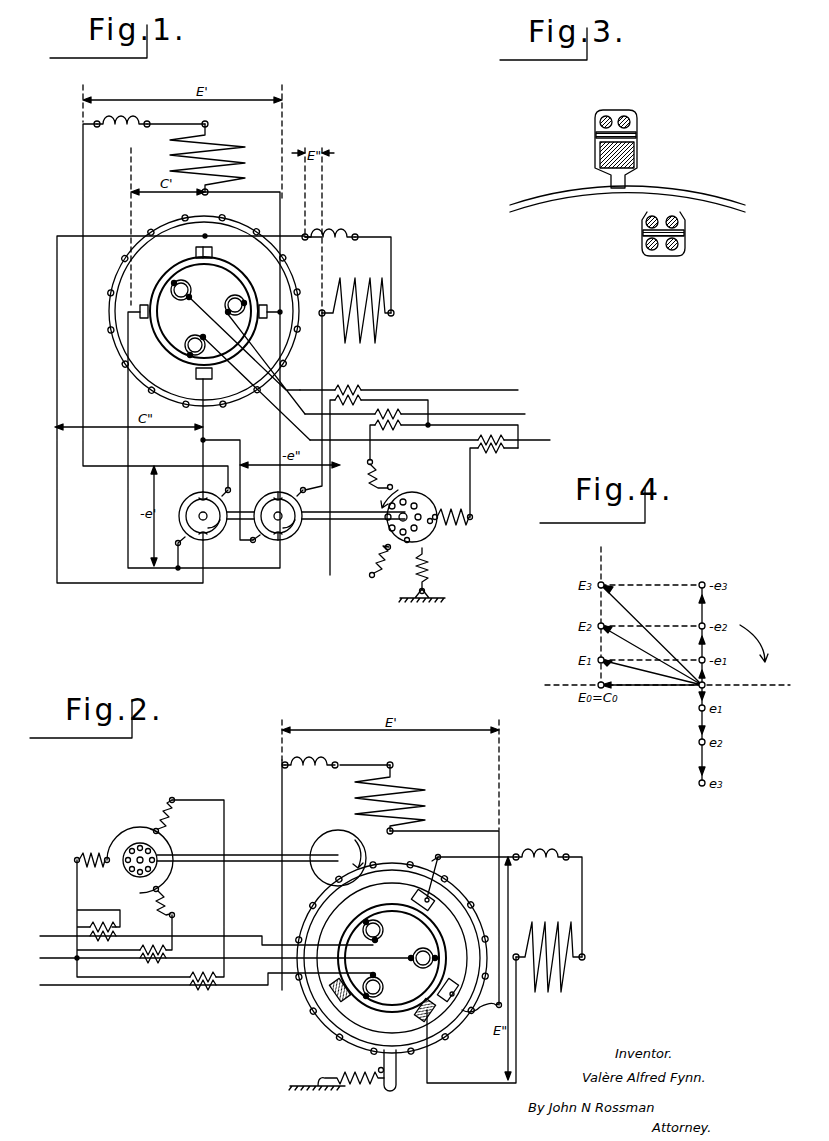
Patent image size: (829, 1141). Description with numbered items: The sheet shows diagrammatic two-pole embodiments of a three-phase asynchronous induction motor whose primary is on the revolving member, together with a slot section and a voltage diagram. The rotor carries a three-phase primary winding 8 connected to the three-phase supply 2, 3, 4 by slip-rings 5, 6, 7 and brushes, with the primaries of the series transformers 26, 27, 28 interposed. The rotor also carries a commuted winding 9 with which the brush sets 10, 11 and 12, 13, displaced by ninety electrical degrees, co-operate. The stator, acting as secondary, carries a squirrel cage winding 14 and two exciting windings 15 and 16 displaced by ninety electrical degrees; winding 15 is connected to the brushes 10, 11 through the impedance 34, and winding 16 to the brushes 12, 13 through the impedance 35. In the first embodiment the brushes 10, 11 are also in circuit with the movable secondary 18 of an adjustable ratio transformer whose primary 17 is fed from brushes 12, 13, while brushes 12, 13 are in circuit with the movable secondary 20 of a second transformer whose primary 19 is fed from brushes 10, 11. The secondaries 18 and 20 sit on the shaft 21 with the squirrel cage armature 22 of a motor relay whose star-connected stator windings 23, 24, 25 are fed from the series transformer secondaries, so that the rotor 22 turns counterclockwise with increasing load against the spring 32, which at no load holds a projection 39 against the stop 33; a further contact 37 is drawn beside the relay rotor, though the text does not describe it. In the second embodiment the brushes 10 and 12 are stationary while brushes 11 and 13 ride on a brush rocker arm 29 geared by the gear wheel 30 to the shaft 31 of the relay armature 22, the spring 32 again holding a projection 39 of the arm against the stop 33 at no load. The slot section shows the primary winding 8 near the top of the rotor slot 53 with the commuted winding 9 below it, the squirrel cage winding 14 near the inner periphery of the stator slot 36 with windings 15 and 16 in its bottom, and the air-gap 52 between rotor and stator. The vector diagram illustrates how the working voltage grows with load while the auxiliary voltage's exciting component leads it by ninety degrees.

In FIG. 1, the three-phase supply line 2 is at (504, 380).
In FIG. 2, the three-phase supply line 2 is at (44, 925).
In FIG. 1, the three-phase supply line 3 is at (522, 405).
In FIG. 2, the three-phase supply line 3 is at (44, 949).
In FIG. 1, the three-phase supply line 4 is at (547, 435).
In FIG. 2, the three-phase supply line 4 is at (44, 977).
In FIG. 1, the slip-ring 5 is at (236, 297).
In FIG. 2, the slip-ring 5 is at (378, 929).
In FIG. 1, the slip-ring 6 is at (183, 284).
In FIG. 2, the slip-ring 6 is at (423, 950).
In FIG. 1, the slip-ring 7 is at (189, 343).
In FIG. 2, the slip-ring 7 is at (378, 986).
In FIG. 1, the three-phase primary winding 8 is at (160, 343).
In FIG. 3, the three-phase primary winding 8 is at (646, 224).
In FIG. 2, the three-phase primary winding 8 is at (437, 942).
In FIG. 1, the commuted winding 9 is at (172, 276).
In FIG. 3, the commuted winding 9 is at (674, 246).
In FIG. 2, the commuted winding 9 is at (355, 918).
In FIG. 1, the brush 10 is at (138, 303).
In FIG. 2, the brush 10 is at (339, 995).
In FIG. 1, the brush 11 is at (268, 321).
In FIG. 2, the brush 11 is at (447, 985).
In FIG. 1, the brush 12 is at (196, 378).
In FIG. 2, the brush 12 is at (416, 1012).
In FIG. 1, the brush 13 is at (213, 249).
In FIG. 2, the brush 13 is at (417, 884).
In FIG. 1, the squirrel cage winding 14 is at (233, 218).
In FIG. 3, the squirrel cage winding 14 is at (612, 158).
In FIG. 2, the squirrel cage winding 14 is at (294, 1016).
In FIG. 1, the secondary exciting winding 15 is at (218, 158).
In FIG. 3, the secondary exciting winding 15 is at (598, 122).
In FIG. 2, the secondary exciting winding 15 is at (401, 798).
In FIG. 1, the secondary exciting winding 16 is at (364, 310).
In FIG. 3, the secondary exciting winding 16 is at (633, 117).
In FIG. 2, the secondary exciting winding 16 is at (549, 949).
In FIG. 1, the adjustable ratio transformer primary 17 is at (190, 498).
In FIG. 1, the movable transformer secondary 18 is at (220, 533).
In FIG. 1, the adjustable ratio transformer primary 19 is at (268, 498).
In FIG. 1, the movable transformer secondary 20 is at (293, 532).
In FIG. 1, the shaft 21 is at (335, 520).
In FIG. 1, the relay rotor 22 is at (420, 503).
In FIG. 2, the relay rotor 22 is at (128, 848).
In FIG. 1, the relay stator winding 23 is at (372, 569).
In FIG. 2, the relay stator winding 23 is at (174, 898).
In FIG. 1, the relay stator winding 24 is at (369, 475).
In FIG. 2, the relay stator winding 24 is at (175, 816).
In FIG. 1, the relay stator winding 25 is at (456, 524).
In FIG. 2, the relay stator winding 25 is at (79, 856).
In FIG. 1, the series transformer 26 is at (409, 473).
In FIG. 2, the series transformer 26 is at (114, 930).
In FIG. 1, the series transformer 27 is at (415, 434).
In FIG. 2, the series transformer 27 is at (143, 959).
In FIG. 1, the series transformer 28 is at (430, 476).
In FIG. 2, the series transformer 28 is at (203, 987).
In FIG. 2, the brush rocker arm 29 is at (460, 916).
In FIG. 2, the gear wheel 30 is at (330, 833).
In FIG. 2, the relay armature shaft 31 is at (262, 852).
In FIG. 1, the spring 32 is at (424, 575).
In FIG. 2, the spring 32 is at (336, 1087).
In FIG. 1, the stop 33 is at (433, 524).
In FIG. 2, the stop 33 is at (378, 1069).
In FIG. 1, the impedance 34 is at (122, 132).
In FIG. 2, the impedance 34 is at (310, 754).
In FIG. 1, the impedance 35 is at (346, 263).
In FIG. 2, the impedance 35 is at (542, 845).
In FIG. 3, the stator slot 36 is at (610, 108).
In FIG. 1, the contact 37 is at (405, 543).
In FIG. 1, the projection 39 is at (412, 485).
In FIG. 2, the projection 39 is at (395, 1075).
In FIG. 3, the air-gap 52 is at (530, 182).
In FIG. 3, the rotor slot 53 is at (655, 257).